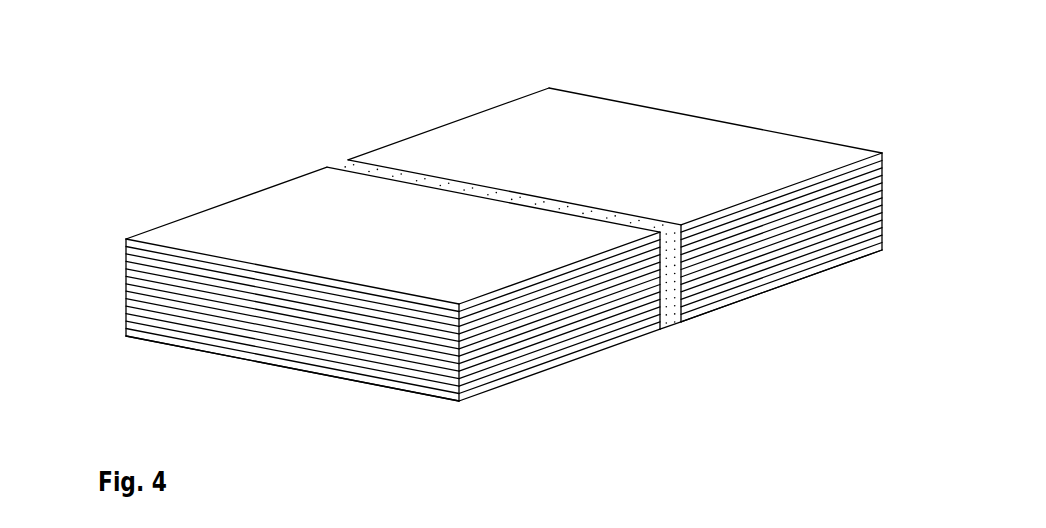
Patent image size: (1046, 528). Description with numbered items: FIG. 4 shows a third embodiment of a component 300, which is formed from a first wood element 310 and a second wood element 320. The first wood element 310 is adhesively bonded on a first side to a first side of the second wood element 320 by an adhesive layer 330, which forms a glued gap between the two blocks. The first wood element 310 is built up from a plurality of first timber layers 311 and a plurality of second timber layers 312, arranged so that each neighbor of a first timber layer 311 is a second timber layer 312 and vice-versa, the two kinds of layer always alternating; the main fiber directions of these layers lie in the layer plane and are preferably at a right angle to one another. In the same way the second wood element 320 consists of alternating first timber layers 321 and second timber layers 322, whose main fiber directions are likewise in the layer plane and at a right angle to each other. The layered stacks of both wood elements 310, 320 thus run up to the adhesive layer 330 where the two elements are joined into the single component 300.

The component 300 is at (275, 66).
The first wood element 310 is at (262, 217).
The first timber layer 311 is at (130, 249).
The second timber layer 312 is at (140, 243).
The second wood element 320 is at (475, 117).
The first timber layer 321 is at (867, 159).
The second timber layer 322 is at (870, 169).
The adhesive layer 330 is at (350, 170).